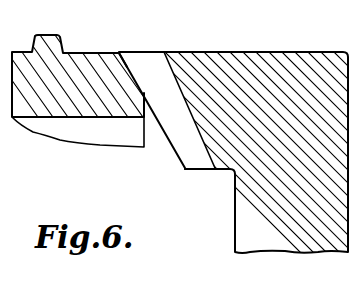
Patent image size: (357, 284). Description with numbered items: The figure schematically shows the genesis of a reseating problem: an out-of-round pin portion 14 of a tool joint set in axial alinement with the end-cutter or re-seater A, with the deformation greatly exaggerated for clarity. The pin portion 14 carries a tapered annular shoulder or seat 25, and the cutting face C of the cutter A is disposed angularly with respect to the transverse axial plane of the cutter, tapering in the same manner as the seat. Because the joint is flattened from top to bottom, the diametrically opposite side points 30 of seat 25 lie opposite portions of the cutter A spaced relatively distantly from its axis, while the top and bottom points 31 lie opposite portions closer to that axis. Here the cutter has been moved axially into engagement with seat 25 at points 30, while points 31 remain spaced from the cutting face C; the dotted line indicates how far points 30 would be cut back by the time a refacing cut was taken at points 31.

The end-cutter or re-seater A is at (273, 62).
The annular shoulder or seat 25 is at (132, 69).
The pin portion 14 is at (50, 100).
The diametrically opposite side points of seat 30 is at (116, 51).
The top and bottom points of the seat 31 is at (117, 113).
The cutting face C is at (170, 145).